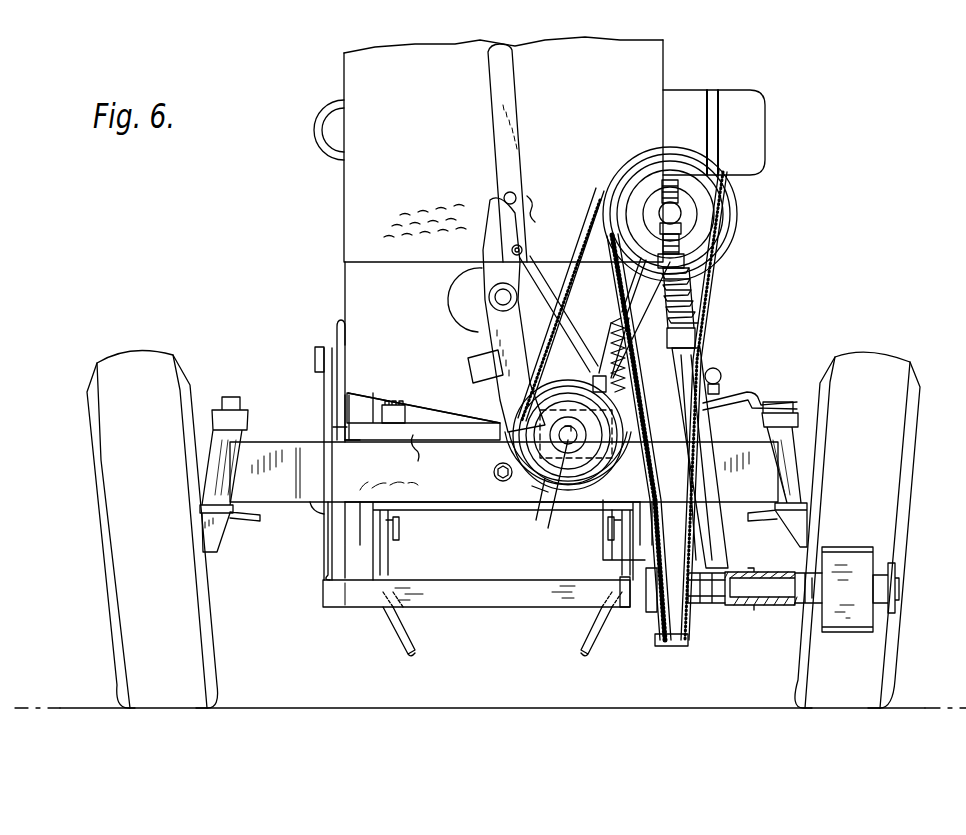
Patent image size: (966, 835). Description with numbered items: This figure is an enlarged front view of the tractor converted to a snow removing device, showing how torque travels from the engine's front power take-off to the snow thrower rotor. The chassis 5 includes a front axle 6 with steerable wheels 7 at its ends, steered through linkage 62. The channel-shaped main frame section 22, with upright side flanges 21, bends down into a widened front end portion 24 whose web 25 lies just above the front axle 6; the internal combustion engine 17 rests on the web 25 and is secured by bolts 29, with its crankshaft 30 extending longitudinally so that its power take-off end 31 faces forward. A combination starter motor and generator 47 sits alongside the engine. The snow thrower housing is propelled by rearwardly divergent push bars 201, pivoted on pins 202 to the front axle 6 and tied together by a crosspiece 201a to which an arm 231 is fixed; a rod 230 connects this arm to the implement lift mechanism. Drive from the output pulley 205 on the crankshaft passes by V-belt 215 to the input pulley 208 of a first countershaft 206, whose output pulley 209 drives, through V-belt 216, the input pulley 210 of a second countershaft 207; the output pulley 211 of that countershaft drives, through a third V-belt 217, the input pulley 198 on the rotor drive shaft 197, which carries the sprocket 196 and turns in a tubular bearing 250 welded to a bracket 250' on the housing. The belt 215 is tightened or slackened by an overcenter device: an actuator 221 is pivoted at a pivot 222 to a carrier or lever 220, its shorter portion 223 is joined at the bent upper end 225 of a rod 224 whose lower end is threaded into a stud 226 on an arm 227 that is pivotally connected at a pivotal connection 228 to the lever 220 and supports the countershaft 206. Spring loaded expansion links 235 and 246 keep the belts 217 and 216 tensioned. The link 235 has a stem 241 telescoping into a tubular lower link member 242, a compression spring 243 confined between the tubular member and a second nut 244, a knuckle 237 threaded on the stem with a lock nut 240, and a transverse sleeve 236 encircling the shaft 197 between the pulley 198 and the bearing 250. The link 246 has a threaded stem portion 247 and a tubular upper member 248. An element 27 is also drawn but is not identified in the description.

The chassis 5 is at (304, 264).
The front axle 6 is at (450, 505).
The steerable wheels 7 is at (118, 585).
The internal combustion engine 17 is at (428, 406).
The upright side flanges 21 is at (346, 408).
The channel-shaped main frame section 22 is at (347, 425).
The front end portion 24 is at (425, 452).
The web 25 is at (388, 450).
The nut 27 is at (494, 479).
The bolts 29 is at (396, 404).
The crankshaft 30 is at (495, 297).
The power take-off end 31 is at (492, 305).
The combination electric starter motor and generator 47 is at (325, 128).
The linkage 62 is at (748, 387).
The sprocket 196 is at (893, 568).
The rotor drive shaft 197 is at (765, 603).
The input pulley 198 is at (660, 650).
The push bars 201 is at (400, 632).
The crosspiece 201a is at (510, 590).
The pins 202 is at (400, 535).
The output pulley 205 is at (472, 290).
The first countershaft 206 is at (577, 470).
The second countershaft 207 is at (686, 218).
The input pulley 208 is at (534, 489).
The output pulley 209 is at (541, 490).
The input pulley 210 is at (690, 210).
The output pulley 211 is at (682, 230).
The V-belt 215 is at (494, 395).
The V-belt 216 is at (592, 233).
The third V-belt 217 is at (718, 330).
The carrier or lever 220 is at (488, 325).
The actuator 221 is at (512, 86).
The pivot 222 is at (505, 197).
The shorter portion 223 is at (533, 210).
The link or rod 224 is at (530, 264).
The upper end 225 is at (512, 251).
The stud 226 is at (602, 477).
The arm 227 is at (540, 500).
The pivotal connection 228 is at (530, 455).
The rod 230 is at (336, 330).
The arm 231 is at (322, 391).
The spring loaded expansion link 235 is at (703, 360).
The transverse sleeve 236 is at (735, 572).
The knuckle 237 is at (682, 184).
The lock nut 240 is at (682, 247).
The stem 241 is at (684, 262).
The tubular lower link member 242 is at (701, 431).
The compression spring 243 is at (700, 300).
The second nut 244 is at (690, 265).
The expansion link 246 is at (624, 292).
The threaded stem portion 247 is at (622, 312).
The tubular upper member 248 is at (622, 302).
The tubular bearing 250 is at (791, 607).
The bracket 250' is at (886, 602).